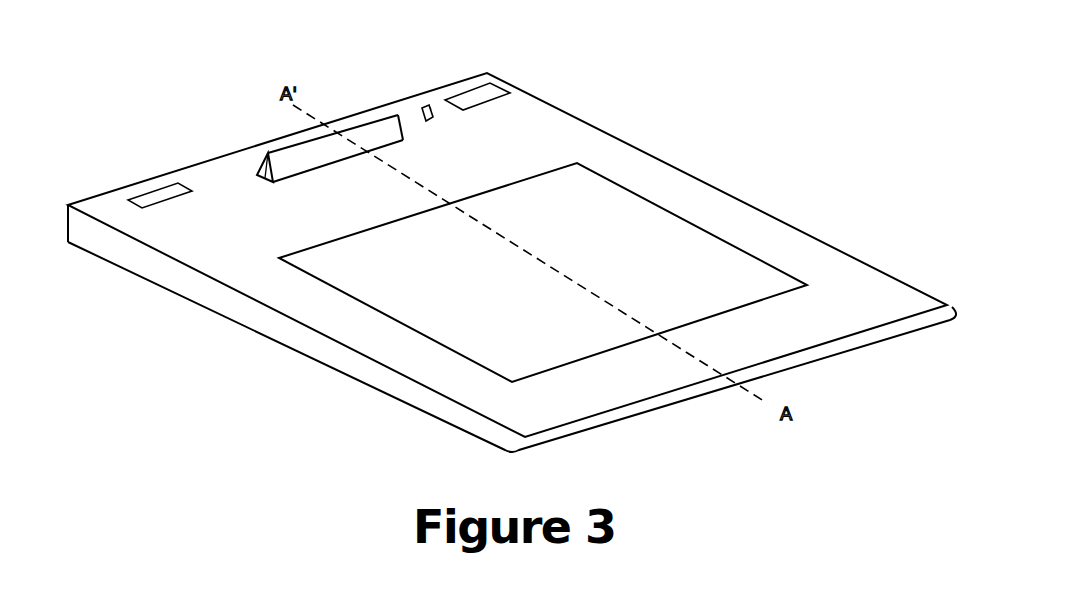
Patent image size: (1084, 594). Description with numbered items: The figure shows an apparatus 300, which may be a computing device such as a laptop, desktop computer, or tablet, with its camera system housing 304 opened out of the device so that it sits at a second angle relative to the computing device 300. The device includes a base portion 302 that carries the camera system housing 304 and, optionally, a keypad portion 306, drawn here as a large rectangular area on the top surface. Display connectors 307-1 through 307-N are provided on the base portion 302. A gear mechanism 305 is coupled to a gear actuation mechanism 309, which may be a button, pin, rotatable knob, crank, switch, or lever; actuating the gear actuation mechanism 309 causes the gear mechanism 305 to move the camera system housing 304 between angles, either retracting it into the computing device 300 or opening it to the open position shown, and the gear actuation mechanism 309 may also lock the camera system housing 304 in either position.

The apparatus 300 is at (227, 106).
The base portion 302 is at (543, 117).
The camera system housing 304 is at (372, 137).
The gear mechanism 305 is at (257, 172).
The keypad portion 306 is at (650, 220).
The display connector 307-1 is at (163, 197).
The display connector 307-N is at (485, 90).
The gear actuation mechanism 309 is at (428, 112).